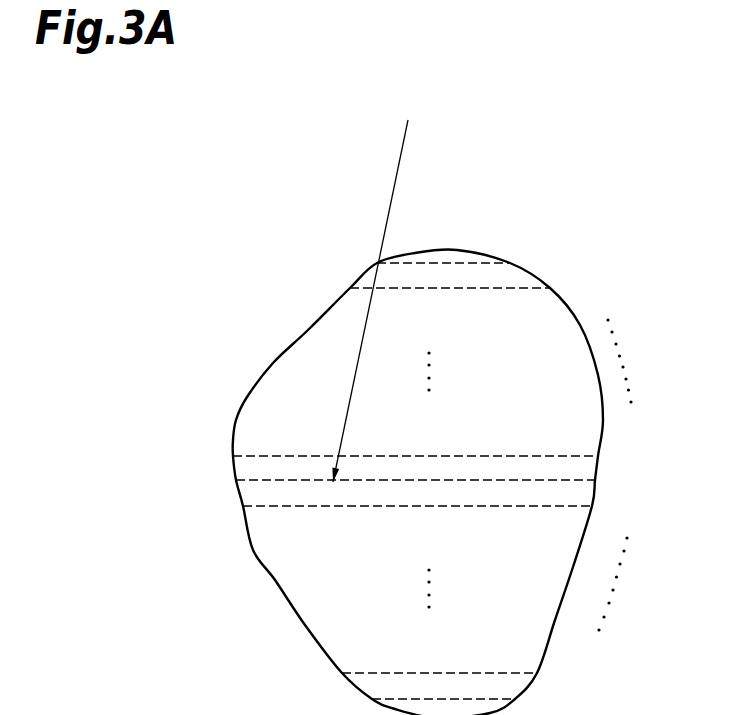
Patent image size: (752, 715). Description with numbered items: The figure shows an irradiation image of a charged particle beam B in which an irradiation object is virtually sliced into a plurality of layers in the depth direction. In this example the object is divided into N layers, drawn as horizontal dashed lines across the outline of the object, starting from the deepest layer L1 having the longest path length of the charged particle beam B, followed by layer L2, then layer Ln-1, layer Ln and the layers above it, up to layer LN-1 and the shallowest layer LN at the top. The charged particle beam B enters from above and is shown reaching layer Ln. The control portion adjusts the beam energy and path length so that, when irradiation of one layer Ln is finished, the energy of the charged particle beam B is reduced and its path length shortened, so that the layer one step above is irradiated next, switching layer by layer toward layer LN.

The charged particle beam B is at (391, 206).
The layer LN is at (445, 262).
The layer LN-1 is at (520, 288).
The layer Ln is at (570, 480).
The layer Ln-1 is at (555, 506).
The layer L2 is at (510, 673).
The layer L1 is at (488, 699).